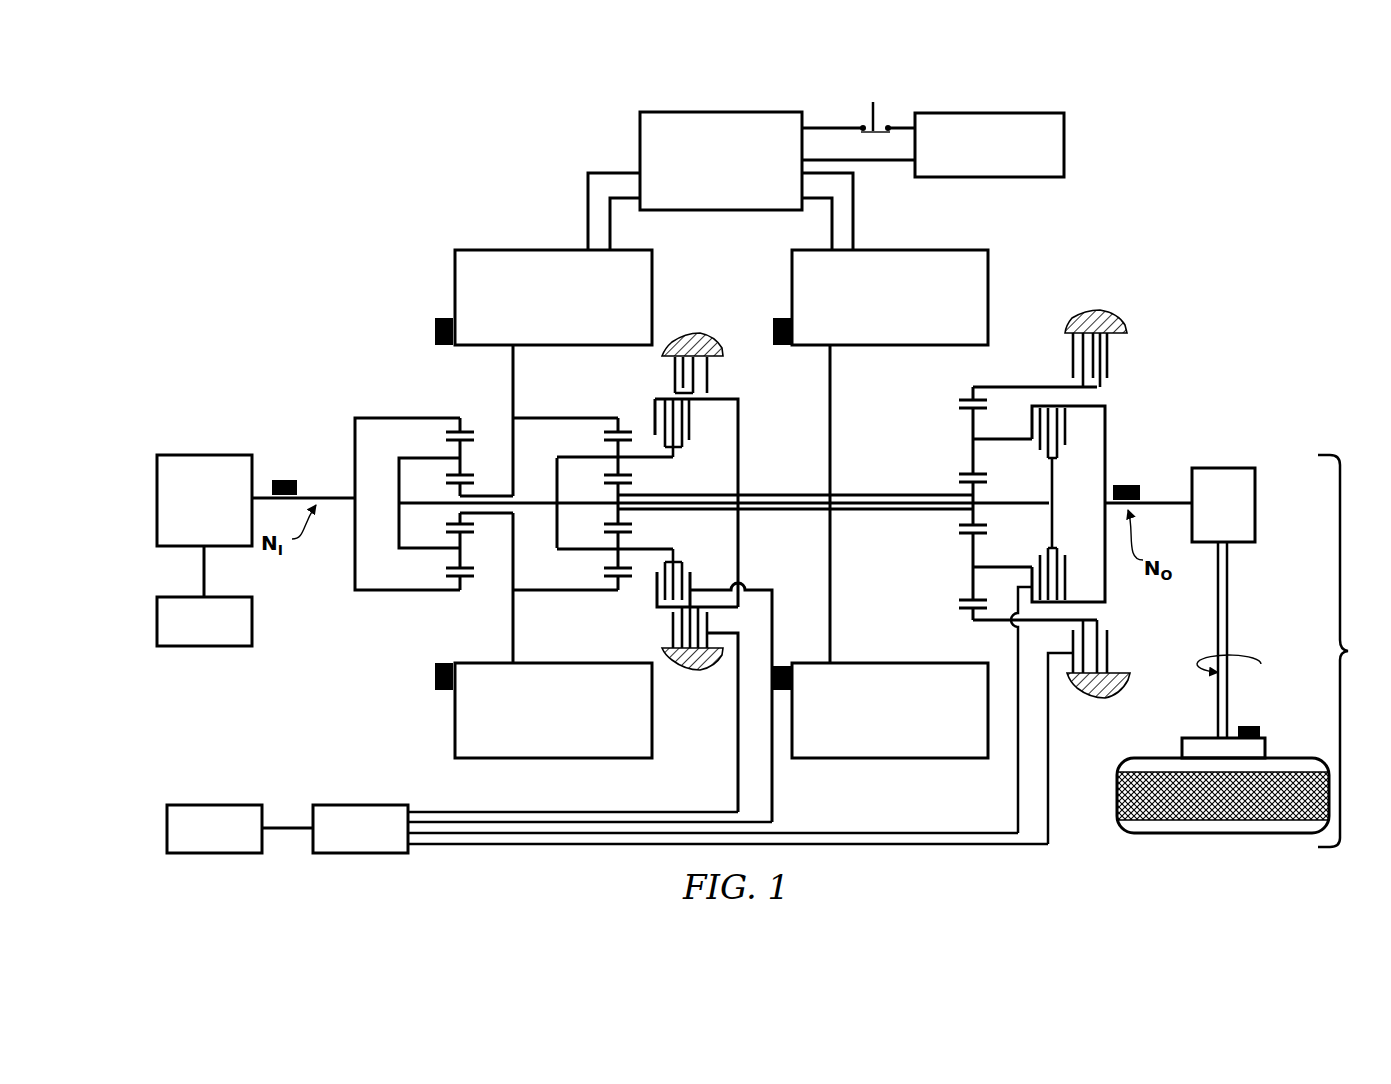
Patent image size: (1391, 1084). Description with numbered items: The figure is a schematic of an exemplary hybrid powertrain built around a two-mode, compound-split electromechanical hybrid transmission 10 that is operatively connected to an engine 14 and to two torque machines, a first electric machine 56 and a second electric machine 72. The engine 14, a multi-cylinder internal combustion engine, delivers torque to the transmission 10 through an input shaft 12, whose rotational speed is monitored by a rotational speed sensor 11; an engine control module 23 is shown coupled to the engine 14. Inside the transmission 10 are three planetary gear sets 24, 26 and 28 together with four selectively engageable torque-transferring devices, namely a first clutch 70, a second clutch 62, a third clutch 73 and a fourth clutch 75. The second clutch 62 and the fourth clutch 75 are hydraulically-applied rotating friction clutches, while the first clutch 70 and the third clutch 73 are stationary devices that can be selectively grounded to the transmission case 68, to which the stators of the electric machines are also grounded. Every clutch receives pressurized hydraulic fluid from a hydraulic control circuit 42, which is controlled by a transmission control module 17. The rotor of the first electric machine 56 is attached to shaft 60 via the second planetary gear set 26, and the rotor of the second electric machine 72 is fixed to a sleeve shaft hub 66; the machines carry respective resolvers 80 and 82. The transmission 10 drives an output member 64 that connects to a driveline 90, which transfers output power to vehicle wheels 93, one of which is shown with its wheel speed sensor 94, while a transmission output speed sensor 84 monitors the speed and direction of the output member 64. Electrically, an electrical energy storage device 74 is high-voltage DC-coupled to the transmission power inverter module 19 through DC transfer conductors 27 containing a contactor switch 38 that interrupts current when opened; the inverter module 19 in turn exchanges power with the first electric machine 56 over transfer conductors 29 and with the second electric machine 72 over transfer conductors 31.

The electromechanical hybrid transmission 10 is at (412, 208).
The rotational speed sensor 11 is at (284, 480).
The input shaft 12 is at (332, 497).
The engine 14 is at (212, 455).
The transmission control module 17 is at (205, 805).
The transmission power inverter module 19 is at (640, 128).
The engine control module 23 is at (252, 636).
The first planetary gear set 24 is at (448, 410).
The second planetary gear set 26 is at (612, 410).
The DC transfer conductors 27 is at (818, 127).
The third planetary gear set 28 is at (963, 386).
The transfer conductors 29 is at (588, 212).
The transfer conductors 31 is at (855, 207).
The contactor switch 38 is at (880, 110).
The hydraulic control circuit 42 is at (330, 805).
The first electric machine 56 is at (455, 283).
The shaft 60 is at (1023, 500).
The clutch C2 62 is at (1070, 447).
The output member 64 is at (1160, 500).
The sleeve shaft hub 66 is at (868, 495).
The transmission case 68 is at (697, 333).
The clutch C1 70 is at (1060, 350).
The second electric machine 72 is at (988, 267).
The clutch C3 73 is at (714, 383).
The electrical energy storage device 74 is at (1066, 132).
The clutch C4 75 is at (697, 431).
The resolver 80 is at (435, 330).
The resolver 82 is at (782, 318).
The transmission output speed sensor 84 is at (1130, 485).
The driveline 90 is at (1348, 651).
The vehicle wheel 93 is at (1182, 746).
The wheel speed sensor 94 is at (1250, 725).